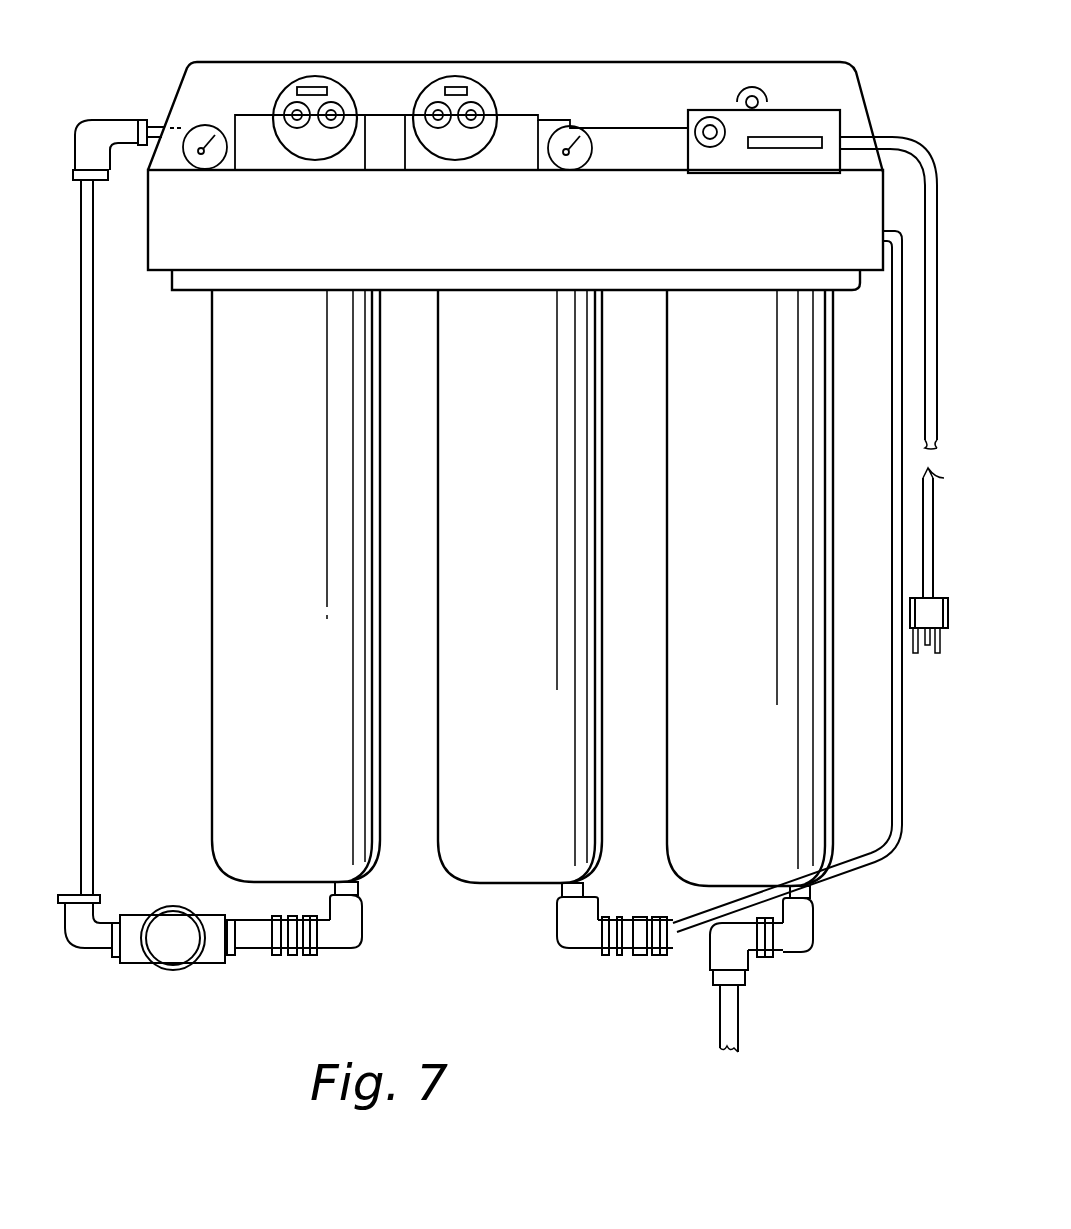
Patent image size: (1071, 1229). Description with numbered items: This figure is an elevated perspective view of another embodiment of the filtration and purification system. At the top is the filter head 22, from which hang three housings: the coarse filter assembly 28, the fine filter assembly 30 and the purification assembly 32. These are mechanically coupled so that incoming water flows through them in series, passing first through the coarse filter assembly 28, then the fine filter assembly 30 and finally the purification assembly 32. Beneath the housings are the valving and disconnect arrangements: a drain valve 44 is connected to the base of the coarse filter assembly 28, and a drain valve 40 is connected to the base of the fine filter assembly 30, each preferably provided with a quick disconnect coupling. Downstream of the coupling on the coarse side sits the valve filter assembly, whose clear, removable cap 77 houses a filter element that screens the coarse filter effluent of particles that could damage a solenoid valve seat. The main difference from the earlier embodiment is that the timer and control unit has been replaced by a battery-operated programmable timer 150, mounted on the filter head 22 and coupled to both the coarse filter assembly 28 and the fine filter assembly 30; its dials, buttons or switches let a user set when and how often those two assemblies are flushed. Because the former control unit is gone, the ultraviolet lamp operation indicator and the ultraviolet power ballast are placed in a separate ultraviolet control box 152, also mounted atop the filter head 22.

The filter head 22 is at (387, 244).
The coarse filter assembly 28 is at (303, 770).
The fine filter assembly 30 is at (527, 770).
The purification assembly 32 is at (753, 770).
The drain valve 40 is at (560, 930).
The drain valve 44 is at (362, 918).
The removable cap 77 is at (175, 960).
The programmable timer 150 is at (347, 80).
The ultraviolet control box 152 is at (803, 112).